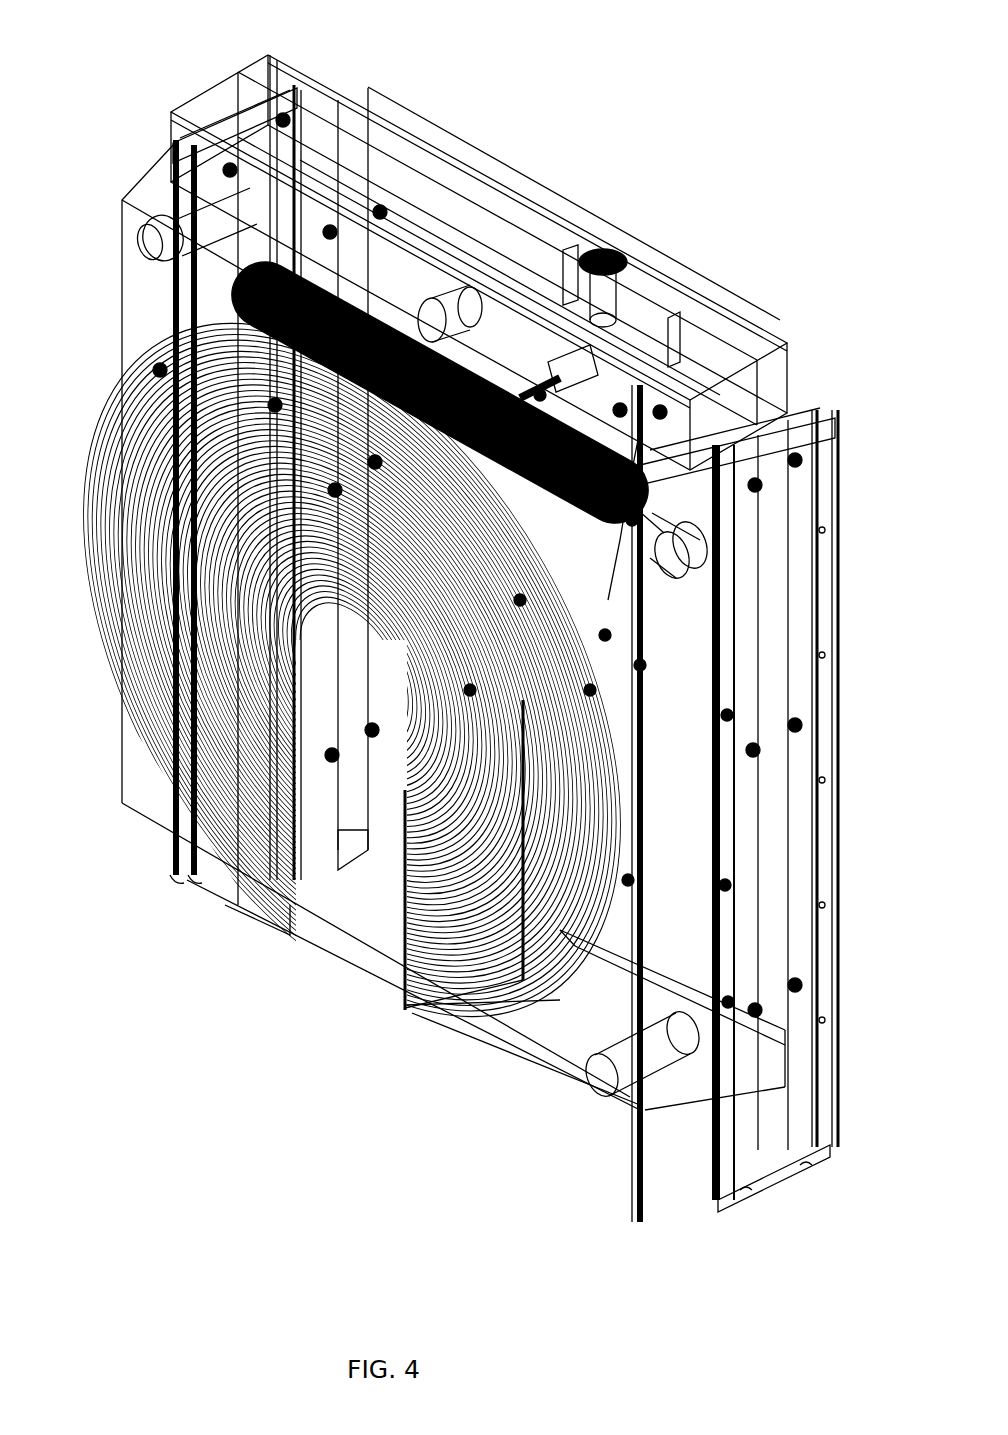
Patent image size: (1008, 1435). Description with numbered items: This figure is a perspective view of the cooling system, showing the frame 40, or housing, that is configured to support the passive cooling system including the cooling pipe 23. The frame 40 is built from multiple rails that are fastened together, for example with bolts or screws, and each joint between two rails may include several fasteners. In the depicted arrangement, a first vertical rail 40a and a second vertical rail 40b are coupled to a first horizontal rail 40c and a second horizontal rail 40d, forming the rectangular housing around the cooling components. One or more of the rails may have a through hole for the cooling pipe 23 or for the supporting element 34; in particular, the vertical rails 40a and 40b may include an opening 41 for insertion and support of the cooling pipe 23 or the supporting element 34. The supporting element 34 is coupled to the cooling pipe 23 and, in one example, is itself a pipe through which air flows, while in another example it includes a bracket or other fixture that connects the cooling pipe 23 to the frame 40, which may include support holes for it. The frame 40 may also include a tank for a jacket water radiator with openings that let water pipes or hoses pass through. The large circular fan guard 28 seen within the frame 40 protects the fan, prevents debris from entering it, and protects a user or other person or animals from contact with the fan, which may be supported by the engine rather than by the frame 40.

The frame 40 is at (142, 76).
The first vertical rail 40a is at (232, 106).
The second vertical rail 40b is at (816, 412).
The first horizontal rail 40c is at (570, 212).
The second horizontal rail 40d is at (520, 1045).
The opening 41 is at (150, 236).
The cooling pipe 23 is at (256, 270).
The fan guard 28 is at (122, 472).
The supporting element 34 is at (652, 560).